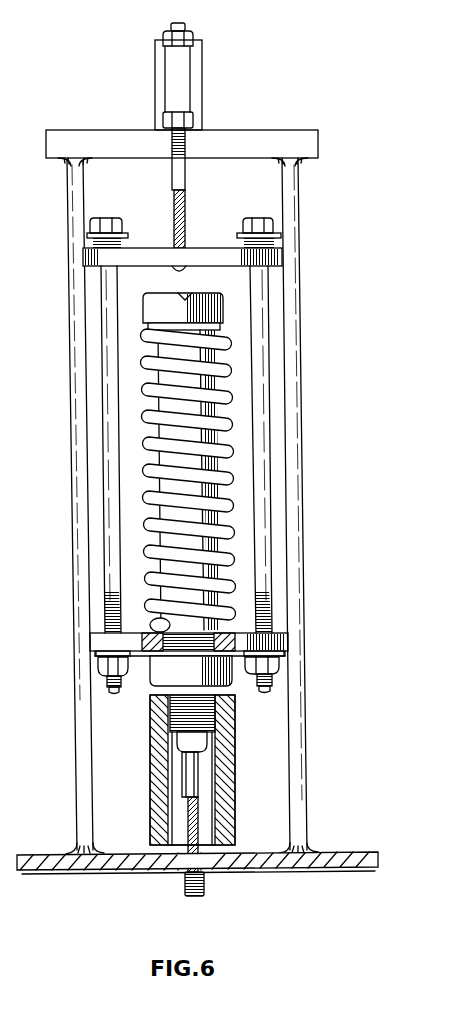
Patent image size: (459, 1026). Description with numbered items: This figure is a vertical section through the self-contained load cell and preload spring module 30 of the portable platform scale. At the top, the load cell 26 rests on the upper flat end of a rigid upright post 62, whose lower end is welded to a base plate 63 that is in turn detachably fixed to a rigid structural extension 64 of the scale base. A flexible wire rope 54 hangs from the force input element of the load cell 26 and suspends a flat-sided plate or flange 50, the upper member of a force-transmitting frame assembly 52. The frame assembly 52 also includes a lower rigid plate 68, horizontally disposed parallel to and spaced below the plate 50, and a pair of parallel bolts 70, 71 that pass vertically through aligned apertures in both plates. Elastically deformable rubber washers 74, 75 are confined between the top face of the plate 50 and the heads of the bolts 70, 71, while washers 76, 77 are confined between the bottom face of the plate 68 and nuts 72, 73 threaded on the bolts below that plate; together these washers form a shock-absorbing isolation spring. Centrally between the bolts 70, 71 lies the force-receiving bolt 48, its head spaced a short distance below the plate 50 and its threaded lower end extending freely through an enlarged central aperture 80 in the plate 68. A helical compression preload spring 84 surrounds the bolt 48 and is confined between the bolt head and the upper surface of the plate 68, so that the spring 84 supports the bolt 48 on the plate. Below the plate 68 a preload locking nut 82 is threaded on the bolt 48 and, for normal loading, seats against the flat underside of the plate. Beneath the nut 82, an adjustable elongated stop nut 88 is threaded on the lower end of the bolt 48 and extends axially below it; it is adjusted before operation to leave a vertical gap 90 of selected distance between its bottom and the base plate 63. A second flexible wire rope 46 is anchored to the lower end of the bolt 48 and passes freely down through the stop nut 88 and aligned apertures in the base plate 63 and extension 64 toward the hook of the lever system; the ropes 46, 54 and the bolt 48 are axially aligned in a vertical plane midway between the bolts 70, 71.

The load cell 26 is at (201, 62).
The flexible wire rope 54 is at (186, 210).
The flat-sided plate or flange 50 is at (158, 248).
The elastically deformable washer 74 is at (88, 237).
The elastically deformable washer 75 is at (276, 239).
The force-transmitting frame assembly 52 is at (272, 292).
The bolt 70 is at (101, 320).
The bolt 71 is at (265, 330).
The upright post 62 is at (298, 406).
The preload spring 84 is at (226, 479).
The force-receiving bolt 48 is at (150, 483).
The self-contained load cell and preload spring module 30 is at (202, 461).
The enlarged central aperture 80 is at (158, 628).
The rigid plate 68 is at (237, 633).
The elastically deformable washer 76 is at (98, 655).
The elastically deformable washer 77 is at (286, 652).
The nut 72 is at (100, 671).
The nut 73 is at (282, 665).
The preload locking nut 82 is at (152, 688).
The adjustable elongated stop nut 88 is at (236, 794).
The flexible wire rope 46 is at (188, 812).
The vertical gap 90 is at (233, 850).
The base plate 63 is at (40, 855).
The rigid structural extension 64 is at (332, 868).